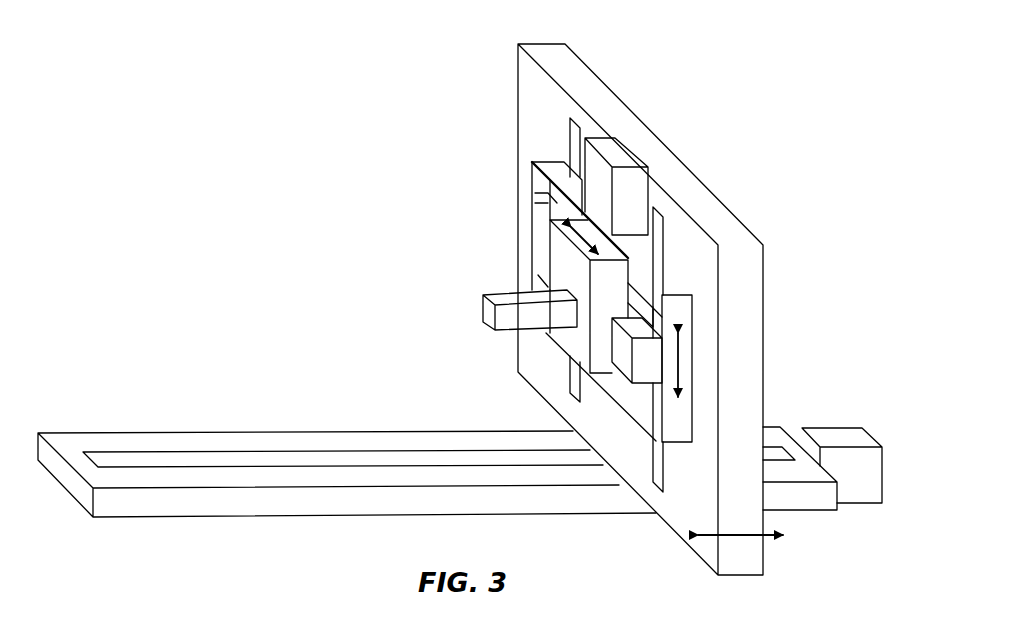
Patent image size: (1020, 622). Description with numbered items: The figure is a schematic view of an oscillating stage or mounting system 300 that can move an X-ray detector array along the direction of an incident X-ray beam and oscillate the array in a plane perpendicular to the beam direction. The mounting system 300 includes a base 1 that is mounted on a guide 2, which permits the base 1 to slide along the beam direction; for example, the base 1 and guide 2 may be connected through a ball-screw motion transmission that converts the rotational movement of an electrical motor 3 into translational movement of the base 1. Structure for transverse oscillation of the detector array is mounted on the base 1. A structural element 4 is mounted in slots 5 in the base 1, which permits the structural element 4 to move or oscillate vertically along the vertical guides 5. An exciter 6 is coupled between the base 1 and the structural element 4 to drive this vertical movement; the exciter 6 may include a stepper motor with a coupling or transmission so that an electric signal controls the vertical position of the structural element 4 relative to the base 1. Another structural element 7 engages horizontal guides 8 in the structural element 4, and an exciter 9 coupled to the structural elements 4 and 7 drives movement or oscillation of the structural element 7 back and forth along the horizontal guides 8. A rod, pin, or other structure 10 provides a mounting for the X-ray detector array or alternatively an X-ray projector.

The mounting system 300 is at (318, 50).
The base 1 is at (580, 74).
The guide 2 is at (150, 436).
The electrical motor 3 is at (850, 431).
The structural element 4 is at (558, 175).
The vertical guides 5 is at (657, 468).
The exciter 6 is at (619, 152).
The structural element 7 is at (607, 302).
The horizontal guides 8 is at (539, 274).
The exciter 9 is at (643, 358).
The rod, pin, or other structure 10 is at (487, 315).